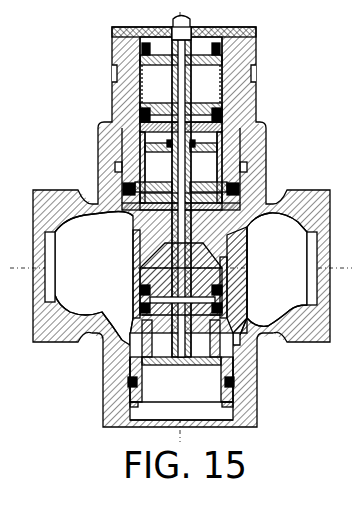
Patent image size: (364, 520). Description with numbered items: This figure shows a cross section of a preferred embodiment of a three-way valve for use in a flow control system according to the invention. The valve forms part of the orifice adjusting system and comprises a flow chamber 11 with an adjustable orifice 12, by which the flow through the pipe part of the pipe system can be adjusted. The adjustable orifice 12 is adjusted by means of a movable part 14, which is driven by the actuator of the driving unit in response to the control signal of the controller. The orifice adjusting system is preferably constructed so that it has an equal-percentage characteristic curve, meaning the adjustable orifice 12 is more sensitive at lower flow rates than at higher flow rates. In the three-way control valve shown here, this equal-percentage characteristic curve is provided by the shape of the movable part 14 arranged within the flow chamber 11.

The flow chamber 11 is at (283, 248).
The adjustable orifice 12 is at (141, 242).
The movable part 14 is at (200, 267).